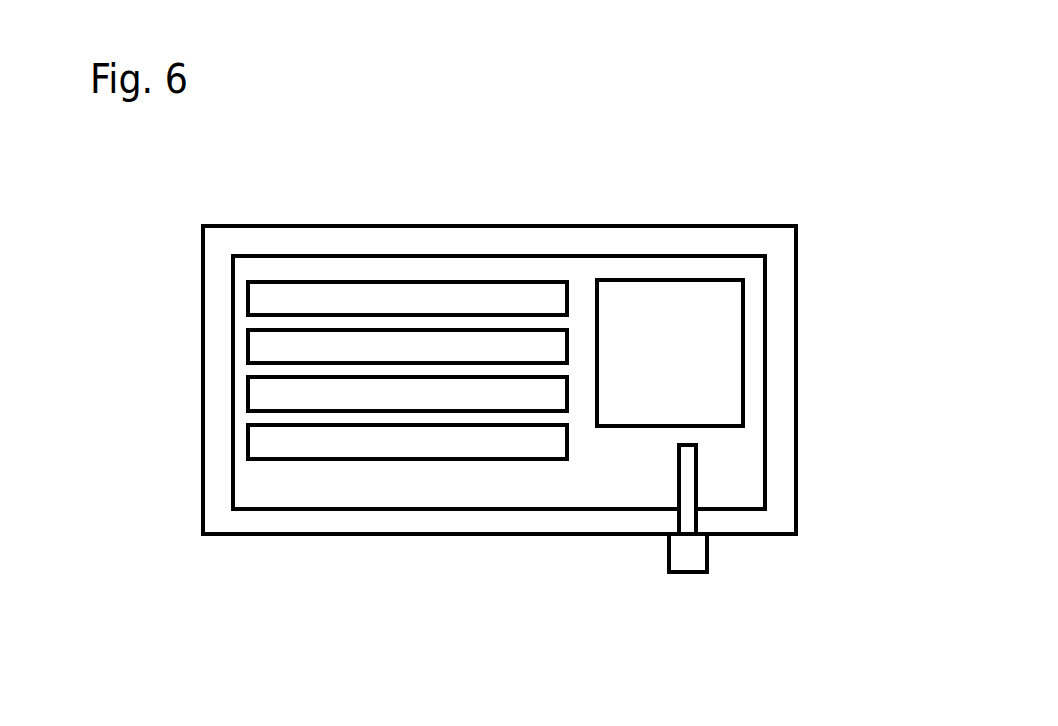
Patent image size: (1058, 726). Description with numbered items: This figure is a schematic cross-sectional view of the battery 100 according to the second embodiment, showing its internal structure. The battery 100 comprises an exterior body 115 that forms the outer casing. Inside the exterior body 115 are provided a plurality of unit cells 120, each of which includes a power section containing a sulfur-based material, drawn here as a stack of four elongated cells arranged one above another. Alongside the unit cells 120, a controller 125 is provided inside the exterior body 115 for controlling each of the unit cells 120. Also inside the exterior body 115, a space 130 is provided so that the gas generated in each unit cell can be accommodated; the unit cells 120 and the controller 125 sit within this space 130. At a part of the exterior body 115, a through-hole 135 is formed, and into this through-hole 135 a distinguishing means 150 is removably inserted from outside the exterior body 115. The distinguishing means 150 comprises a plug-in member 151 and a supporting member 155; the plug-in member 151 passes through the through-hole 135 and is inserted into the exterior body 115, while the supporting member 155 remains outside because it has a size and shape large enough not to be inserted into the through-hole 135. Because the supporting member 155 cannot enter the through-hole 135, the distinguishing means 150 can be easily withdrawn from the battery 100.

The battery 100 is at (504, 379).
The exterior body 115 is at (755, 242).
The unit cells 120 is at (270, 296).
The controller 125 is at (733, 375).
The space 130 is at (277, 493).
The through-hole 135 is at (703, 516).
The distinguishing means 150 is at (686, 540).
The plug-in member 151 is at (688, 482).
The supporting member 155 is at (685, 553).